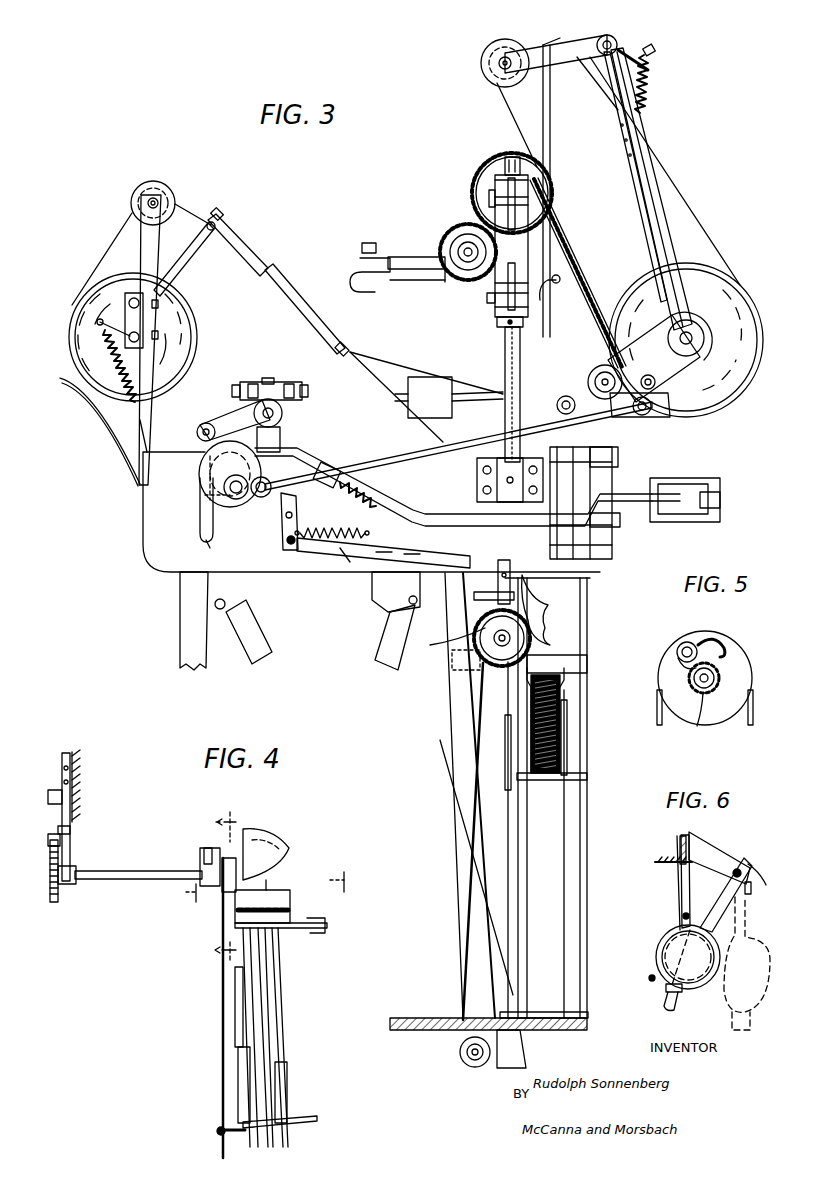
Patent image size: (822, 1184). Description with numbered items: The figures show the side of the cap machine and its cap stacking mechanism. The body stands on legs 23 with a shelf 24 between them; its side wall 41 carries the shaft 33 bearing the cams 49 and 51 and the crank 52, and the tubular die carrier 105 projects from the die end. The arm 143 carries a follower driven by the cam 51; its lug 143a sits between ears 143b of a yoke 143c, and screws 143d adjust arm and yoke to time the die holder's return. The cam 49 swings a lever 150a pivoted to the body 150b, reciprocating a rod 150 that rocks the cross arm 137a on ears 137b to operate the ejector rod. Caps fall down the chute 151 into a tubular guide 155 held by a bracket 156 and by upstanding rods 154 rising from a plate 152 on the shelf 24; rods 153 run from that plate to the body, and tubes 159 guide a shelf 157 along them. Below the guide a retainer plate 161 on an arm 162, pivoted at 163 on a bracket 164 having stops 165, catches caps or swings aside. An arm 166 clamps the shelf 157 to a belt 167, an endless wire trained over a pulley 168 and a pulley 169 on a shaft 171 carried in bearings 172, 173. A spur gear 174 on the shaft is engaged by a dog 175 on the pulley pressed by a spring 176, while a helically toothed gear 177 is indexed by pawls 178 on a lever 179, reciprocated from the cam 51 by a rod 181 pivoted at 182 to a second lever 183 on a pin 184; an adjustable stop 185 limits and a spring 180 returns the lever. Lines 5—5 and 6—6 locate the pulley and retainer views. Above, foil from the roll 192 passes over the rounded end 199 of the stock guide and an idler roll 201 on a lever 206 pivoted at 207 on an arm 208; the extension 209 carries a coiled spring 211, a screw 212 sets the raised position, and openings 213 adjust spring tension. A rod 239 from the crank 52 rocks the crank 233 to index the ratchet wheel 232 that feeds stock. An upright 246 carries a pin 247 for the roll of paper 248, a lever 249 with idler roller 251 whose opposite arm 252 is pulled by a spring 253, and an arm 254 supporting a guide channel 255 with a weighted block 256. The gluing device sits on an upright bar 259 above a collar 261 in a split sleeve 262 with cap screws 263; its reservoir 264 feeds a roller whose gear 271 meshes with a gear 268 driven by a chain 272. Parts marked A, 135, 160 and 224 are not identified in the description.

In FIG. 3, the frame post A is at (675, 186).
In FIG. 4, the section line 5— 5 is at (230, 884).
In FIG. 4, the section line 6— 6 is at (269, 883).
In FIG. 3, the legs 23 is at (450, 748).
In FIG. 6, the legs 23 is at (666, 862).
In FIG. 3, the shelf 24 is at (412, 1018).
In FIG. 3, the shaft 33 is at (238, 500).
In FIG. 3, the side wall 41 is at (172, 560).
In FIG. 4, the side wall 41 is at (76, 757).
In FIG. 3, the cam 49 is at (203, 503).
In FIG. 3, the cam 51 is at (205, 468).
In FIG. 3, the crank 52 is at (258, 500).
In FIG. 3, the tubular die carrier 105 is at (614, 538).
In FIG. 6, the ring 135 is at (658, 950).
In FIG. 3, the cross arm 137a is at (718, 488).
In FIG. 3, the ears 137b is at (668, 480).
In FIG. 3, the arm 143 is at (228, 416).
In FIG. 3, the lug 143a is at (268, 378).
In FIG. 3, the ears 143b is at (290, 384).
In FIG. 3, the yoke 143c is at (285, 404).
In FIG. 3, the screws 143d is at (236, 385).
In FIG. 3, the rod 150 is at (414, 518).
In FIG. 3, the lever 150a is at (200, 522).
In FIG. 3, the body 150b is at (210, 548).
In FIG. 3, the chute 151 is at (545, 592).
In FIG. 3, the plate 152 is at (585, 1012).
In FIG. 3, the rods 153 is at (582, 866).
In FIG. 3, the upstanding rods 154 is at (570, 846).
In FIG. 3, the tubular guide 155 is at (566, 656).
In FIG. 6, the bracket 156 is at (680, 900).
In FIG. 3, the shelf 157 is at (588, 779).
In FIG. 4, the shelf 157 is at (306, 1118).
In FIG. 4, the tubular guide supports 159 is at (286, 1082).
In FIG. 4, the box 160 is at (282, 896).
In FIG. 4, the retainer plate 161 is at (268, 834).
In FIG. 6, the retainer plate 161 is at (666, 986).
In FIG. 6, the arm 162 is at (664, 1002).
In FIG. 6, the pivot 163 is at (740, 860).
In FIG. 6, the bracket 164 is at (712, 850).
In FIG. 6, the stops 165 is at (752, 890).
In FIG. 4, the arm 166 is at (226, 1126).
In FIG. 4, the belt 167 is at (221, 1040).
In FIG. 5, the belt 167 is at (753, 718).
In FIG. 3, the pulley 168 is at (460, 1053).
In FIG. 5, the pulley 169 is at (738, 666).
In FIG. 4, the shaft 171 is at (133, 871).
In FIG. 4, the bearing 172 is at (200, 860).
In FIG. 4, the bearing 173 is at (74, 866).
In FIG. 5, the spur gear 174 is at (699, 704).
In FIG. 5, the dog 175 is at (686, 665).
In FIG. 5, the spring 176 is at (708, 640).
In FIG. 3, the gear 177 is at (475, 660).
In FIG. 4, the gear 177 is at (55, 904).
In FIG. 4, the pawls 178 is at (50, 848).
In FIG. 3, the lever 179 is at (512, 582).
In FIG. 4, the lever 179 is at (72, 800).
In FIG. 3, the spring 180 is at (316, 560).
In FIG. 3, the rod 181 is at (349, 566).
In FIG. 3, the pivot 182 is at (289, 572).
In FIG. 3, the second lever 183 is at (312, 530).
In FIG. 3, the pin 184 is at (340, 486).
In FIG. 3, the adjustable stop 185 is at (452, 648).
In FIG. 3, the roll of foil 192 is at (745, 326).
In FIG. 3, the rounded end 199 is at (570, 43).
In FIG. 3, the idler roll 201 is at (481, 63).
In FIG. 3, the lever 206 is at (540, 42).
In FIG. 3, the pivot 207 is at (610, 36).
In FIG. 3, the arm 208 is at (645, 144).
In FIG. 3, the lever extension 209 is at (638, 52).
In FIG. 3, the coiled spring 211 is at (652, 86).
In FIG. 3, the screw 212 is at (658, 53).
In FIG. 3, the openings 213 is at (626, 136).
In FIG. 3, the box 224 is at (449, 397).
In FIG. 3, the ratchet wheel 232 is at (596, 358).
In FIG. 3, the crank 233 is at (638, 418).
In FIG. 3, the rod 239 is at (366, 470).
In FIG. 3, the upright 246 is at (148, 431).
In FIG. 3, the pin 247 is at (126, 337).
In FIG. 3, the roll of paper 248 is at (92, 300).
In FIG. 3, the lever 249 is at (143, 235).
In FIG. 3, the idler roller 251 is at (170, 192).
In FIG. 3, the opposite arm 252 is at (104, 318).
In FIG. 3, the spring 253 is at (110, 360).
In FIG. 3, the arm 254 is at (180, 272).
In FIG. 3, the guide channel 255 is at (242, 242).
In FIG. 3, the block 256 is at (305, 305).
In FIG. 3, the upright bar 259 is at (505, 341).
In FIG. 3, the collar 261 is at (497, 321).
In FIG. 3, the split sleeve 262 is at (500, 220).
In FIG. 3, the cap screws 263 is at (490, 188).
In FIG. 3, the reservoir 264 is at (400, 258).
In FIG. 3, the gear 268 is at (477, 486).
In FIG. 3, the gear 271 is at (445, 288).
In FIG. 3, the chain 272 is at (575, 262).